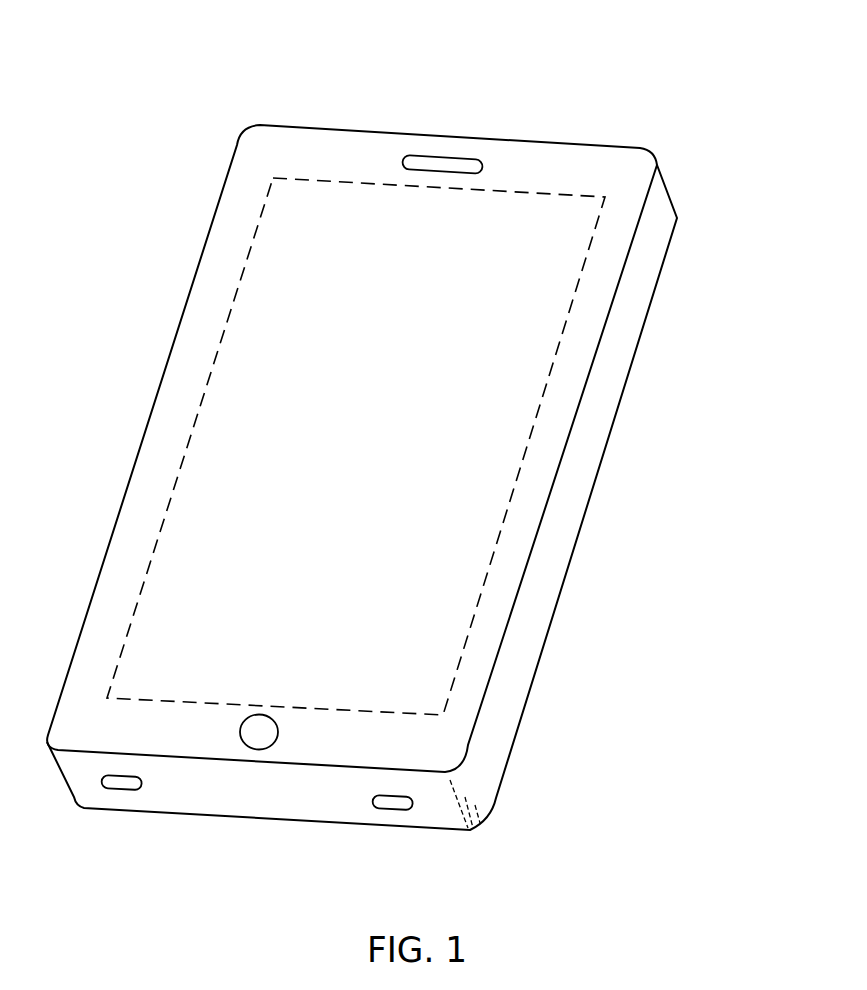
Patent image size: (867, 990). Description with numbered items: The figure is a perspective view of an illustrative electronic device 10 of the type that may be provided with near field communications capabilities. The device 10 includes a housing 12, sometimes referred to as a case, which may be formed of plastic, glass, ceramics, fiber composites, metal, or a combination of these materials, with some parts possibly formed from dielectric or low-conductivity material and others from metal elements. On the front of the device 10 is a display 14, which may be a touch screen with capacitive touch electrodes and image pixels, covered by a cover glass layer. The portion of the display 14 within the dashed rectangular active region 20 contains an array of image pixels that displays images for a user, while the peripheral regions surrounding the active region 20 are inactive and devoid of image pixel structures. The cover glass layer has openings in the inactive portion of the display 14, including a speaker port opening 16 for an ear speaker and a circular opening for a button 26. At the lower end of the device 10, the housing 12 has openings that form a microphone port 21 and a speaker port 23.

The electronic device 10 is at (677, 83).
The housing 12 is at (645, 273).
The display 14 is at (497, 448).
The speaker port opening 16 is at (438, 158).
The rectangular active display region 20 is at (555, 353).
The microphone port 21 is at (120, 789).
The speaker port 23 is at (392, 809).
The button 26 is at (260, 750).